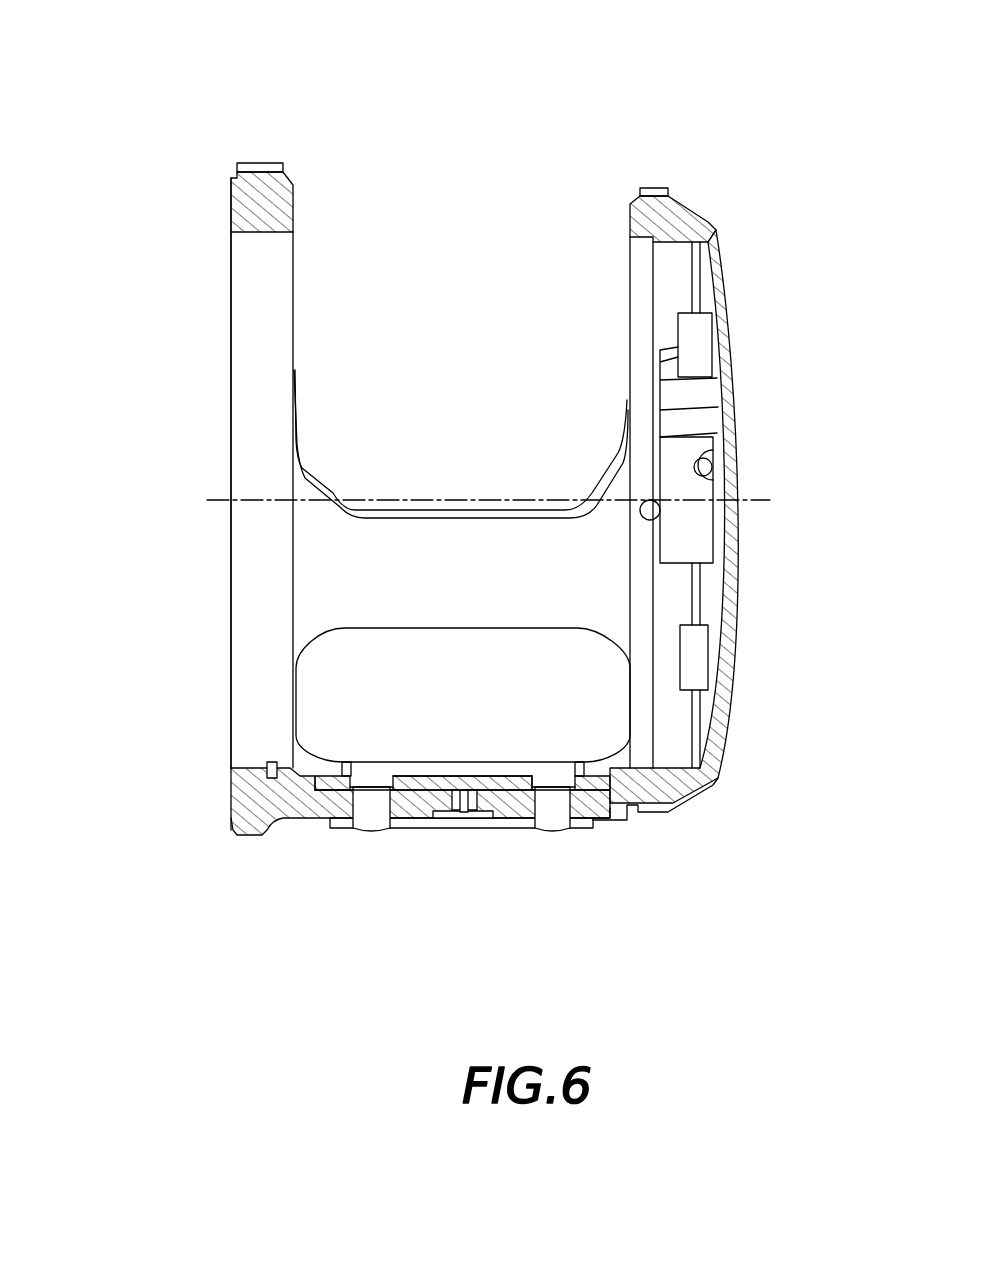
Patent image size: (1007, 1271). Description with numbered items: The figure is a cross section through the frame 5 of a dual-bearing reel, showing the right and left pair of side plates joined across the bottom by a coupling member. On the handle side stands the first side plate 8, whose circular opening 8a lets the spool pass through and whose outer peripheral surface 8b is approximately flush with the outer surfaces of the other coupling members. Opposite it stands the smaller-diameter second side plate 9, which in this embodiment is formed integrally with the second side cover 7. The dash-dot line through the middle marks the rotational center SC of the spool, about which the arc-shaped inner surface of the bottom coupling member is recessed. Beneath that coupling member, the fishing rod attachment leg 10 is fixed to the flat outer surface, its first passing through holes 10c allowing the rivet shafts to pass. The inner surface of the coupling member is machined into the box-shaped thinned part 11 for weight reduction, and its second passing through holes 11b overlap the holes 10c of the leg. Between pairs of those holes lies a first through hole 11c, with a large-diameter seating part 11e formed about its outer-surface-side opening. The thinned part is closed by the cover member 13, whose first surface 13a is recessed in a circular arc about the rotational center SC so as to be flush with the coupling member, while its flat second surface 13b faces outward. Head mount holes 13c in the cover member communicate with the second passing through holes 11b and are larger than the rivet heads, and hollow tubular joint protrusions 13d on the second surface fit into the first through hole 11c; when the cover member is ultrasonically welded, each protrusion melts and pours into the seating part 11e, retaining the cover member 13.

The frame 5 is at (699, 161).
The second side cover 7 is at (733, 322).
The first side plate 8 is at (229, 386).
The circular opening 8a is at (260, 237).
The outer peripheral surface 8b is at (261, 163).
The second side plate 9 is at (643, 223).
The fishing rod attachment leg 10 is at (455, 878).
The first passing through holes 10c is at (570, 832).
The thinned part 11 is at (463, 802).
The second passing through holes 11b is at (370, 828).
The first through hole 11c is at (458, 824).
The seating part 11e is at (436, 830).
The cover member 13 is at (424, 797).
The first surface 13a is at (403, 778).
The second surface 13b is at (330, 820).
The head mount holes 13c is at (350, 790).
The joint protrusions 13d is at (517, 830).
The rotational center SC is at (215, 498).